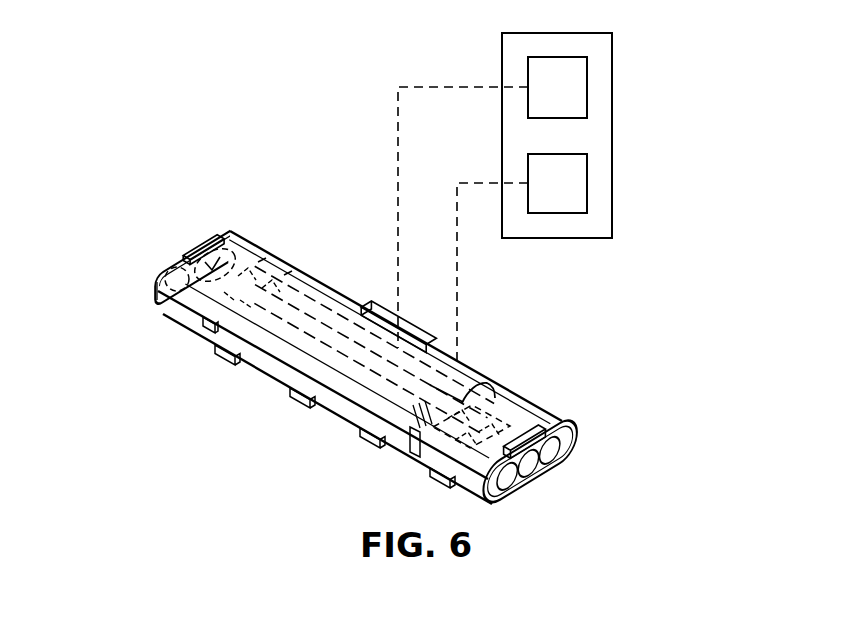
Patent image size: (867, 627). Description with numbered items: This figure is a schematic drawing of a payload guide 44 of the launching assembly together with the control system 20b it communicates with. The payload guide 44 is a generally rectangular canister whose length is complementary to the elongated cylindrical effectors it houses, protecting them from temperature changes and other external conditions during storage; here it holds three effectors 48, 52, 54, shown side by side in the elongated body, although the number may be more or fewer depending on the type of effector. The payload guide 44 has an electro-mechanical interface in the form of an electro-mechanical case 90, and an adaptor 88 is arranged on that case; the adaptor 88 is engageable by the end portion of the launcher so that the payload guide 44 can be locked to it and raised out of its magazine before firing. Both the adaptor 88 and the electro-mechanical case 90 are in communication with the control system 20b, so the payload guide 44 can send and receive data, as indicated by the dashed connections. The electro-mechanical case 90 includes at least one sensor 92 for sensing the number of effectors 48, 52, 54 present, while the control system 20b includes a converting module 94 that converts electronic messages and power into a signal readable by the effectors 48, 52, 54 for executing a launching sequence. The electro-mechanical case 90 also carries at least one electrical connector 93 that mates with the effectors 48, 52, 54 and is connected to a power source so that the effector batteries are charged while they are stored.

The control system 20b is at (612, 137).
The sensor 92 is at (587, 86).
The converting module 94 is at (587, 181).
The payload guide 44 is at (173, 288).
The electro-mechanical case 90 is at (190, 327).
The effector 48 is at (307, 363).
The effector 52 is at (402, 382).
The effector 54 is at (443, 380).
The adaptor 88 is at (380, 310).
The electrical connector 93 is at (480, 400).